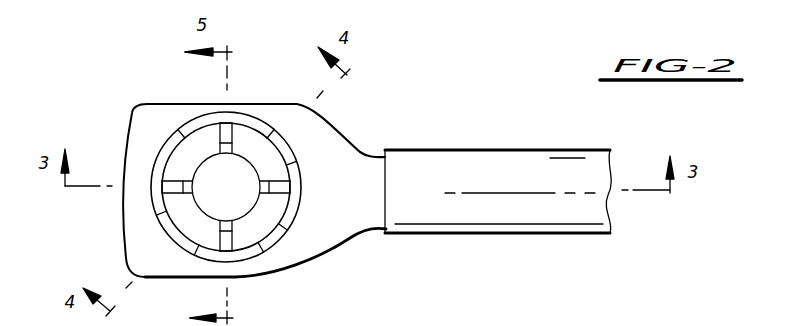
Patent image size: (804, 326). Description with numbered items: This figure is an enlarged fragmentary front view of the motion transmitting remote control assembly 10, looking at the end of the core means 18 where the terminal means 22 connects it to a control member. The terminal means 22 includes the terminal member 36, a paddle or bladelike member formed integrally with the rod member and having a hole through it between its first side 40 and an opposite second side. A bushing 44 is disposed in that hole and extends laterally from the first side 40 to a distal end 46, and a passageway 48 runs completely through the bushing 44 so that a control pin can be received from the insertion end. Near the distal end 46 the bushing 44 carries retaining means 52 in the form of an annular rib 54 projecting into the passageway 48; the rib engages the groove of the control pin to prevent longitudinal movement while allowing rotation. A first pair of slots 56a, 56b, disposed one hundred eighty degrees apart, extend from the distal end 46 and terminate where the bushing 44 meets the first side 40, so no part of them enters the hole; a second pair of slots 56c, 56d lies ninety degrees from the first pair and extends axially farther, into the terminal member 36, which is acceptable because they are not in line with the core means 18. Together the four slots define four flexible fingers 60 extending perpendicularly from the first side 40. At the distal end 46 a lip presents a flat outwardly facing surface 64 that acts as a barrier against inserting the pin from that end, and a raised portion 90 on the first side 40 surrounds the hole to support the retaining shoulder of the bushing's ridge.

The motion transmitting remote control assembly 10 is at (402, 134).
The core means 18 is at (526, 140).
The terminal means 22 is at (348, 124).
The terminal member 36 is at (316, 269).
The first side 40 is at (357, 230).
The bushing 44 is at (161, 154).
The distal end 46 is at (286, 212).
The passageway 48 is at (243, 211).
The retaining means 52 is at (196, 184).
The annular rib 54 is at (245, 135).
The slot 56a is at (163, 184).
The slot 56b is at (296, 190).
The slot 56c is at (238, 128).
The slot 56d is at (216, 238).
The flexible fingers 60 is at (188, 133).
The flat outwardly facing surface 64 is at (170, 211).
The raised portion 90 is at (306, 151).